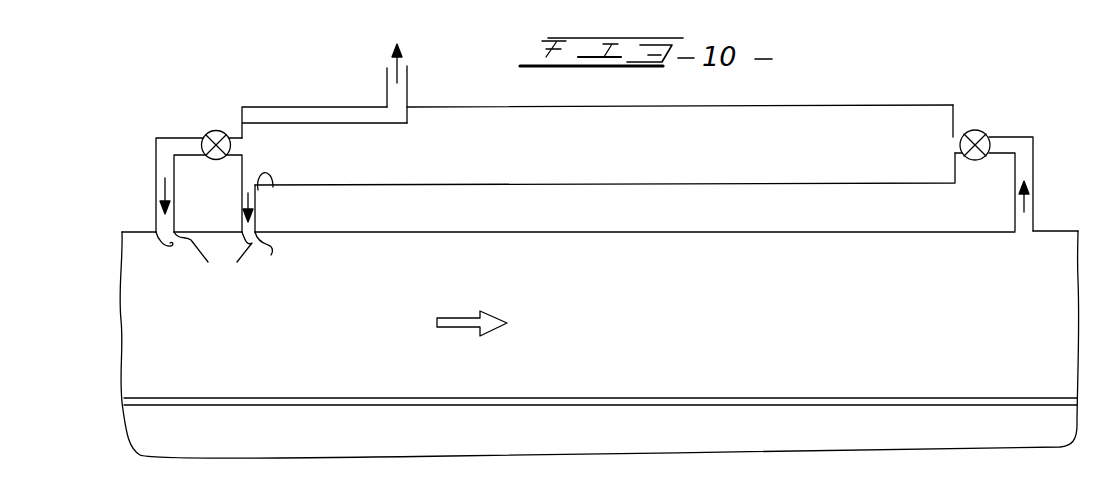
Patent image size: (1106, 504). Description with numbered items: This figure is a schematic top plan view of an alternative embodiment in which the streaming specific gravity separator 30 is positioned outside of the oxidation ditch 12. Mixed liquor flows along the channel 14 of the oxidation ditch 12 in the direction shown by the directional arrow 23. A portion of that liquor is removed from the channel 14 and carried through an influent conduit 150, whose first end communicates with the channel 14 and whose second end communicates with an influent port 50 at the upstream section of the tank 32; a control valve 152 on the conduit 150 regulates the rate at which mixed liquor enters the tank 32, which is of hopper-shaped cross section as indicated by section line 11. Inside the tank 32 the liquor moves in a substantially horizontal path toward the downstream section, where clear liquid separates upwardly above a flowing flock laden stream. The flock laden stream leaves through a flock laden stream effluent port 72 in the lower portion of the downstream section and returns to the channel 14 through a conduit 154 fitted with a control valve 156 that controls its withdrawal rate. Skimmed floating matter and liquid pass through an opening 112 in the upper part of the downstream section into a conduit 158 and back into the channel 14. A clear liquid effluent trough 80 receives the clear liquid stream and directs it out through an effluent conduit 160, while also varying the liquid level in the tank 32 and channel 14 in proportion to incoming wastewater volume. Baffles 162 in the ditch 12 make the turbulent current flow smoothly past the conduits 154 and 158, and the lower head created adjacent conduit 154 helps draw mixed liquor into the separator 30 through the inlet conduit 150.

The section line 11 is at (922, 73).
The oxidation ditch 12 is at (1052, 224).
The channel 14 is at (755, 333).
The directional arrow 23 is at (486, 320).
The separator 30 is at (762, 107).
The tank 32 is at (797, 106).
The influent port 50 is at (955, 128).
The flock laden stream effluent port 72 is at (248, 156).
The clear liquid effluent trough 80 is at (318, 117).
The opening 112 is at (280, 190).
The influent conduit 150 is at (1033, 172).
The control valve 152 is at (984, 136).
The conduit 154 is at (172, 147).
The control valve 156 is at (216, 130).
The conduit 158 is at (247, 227).
The effluent conduit 160 is at (398, 92).
The baffles 162 is at (271, 255).